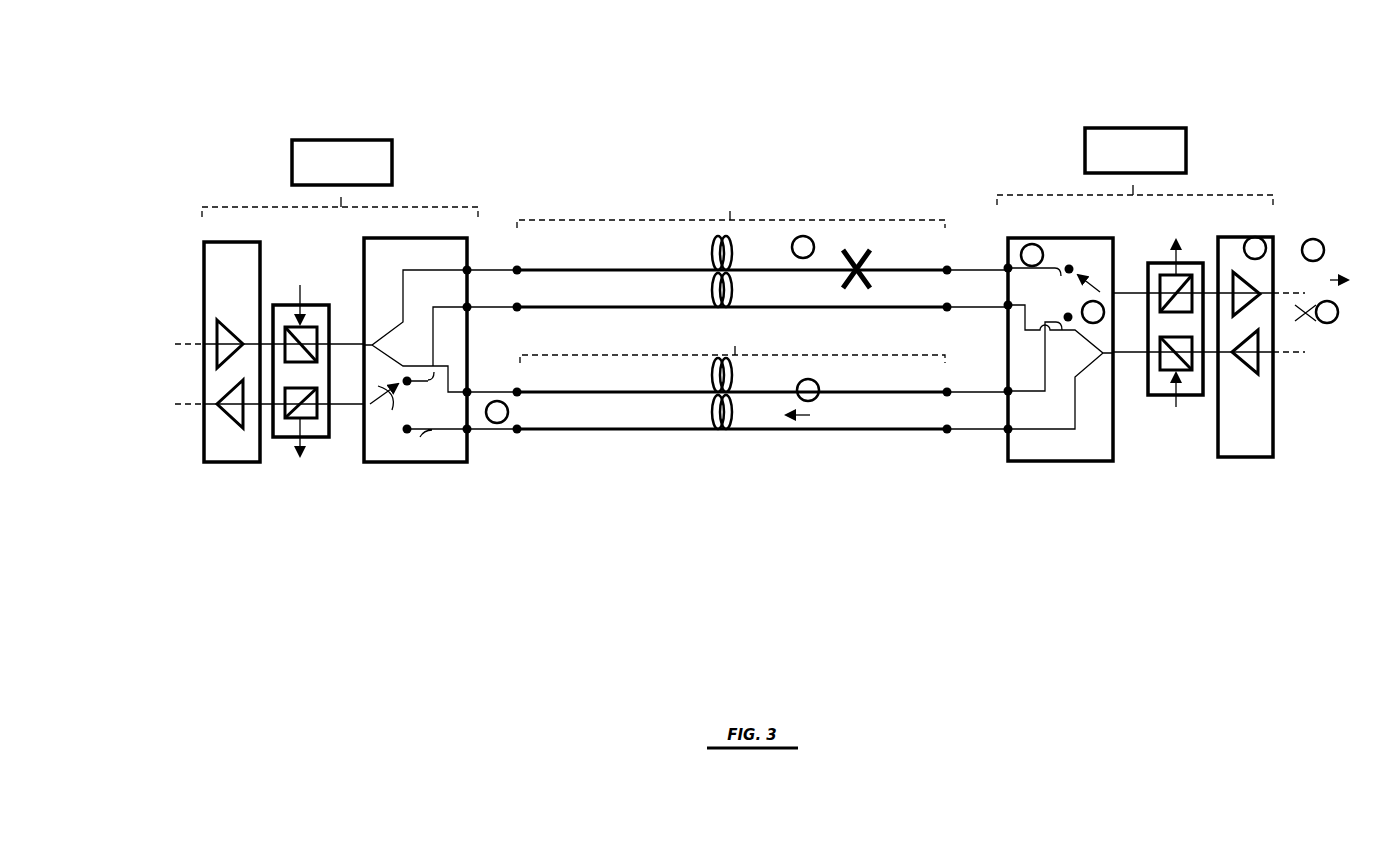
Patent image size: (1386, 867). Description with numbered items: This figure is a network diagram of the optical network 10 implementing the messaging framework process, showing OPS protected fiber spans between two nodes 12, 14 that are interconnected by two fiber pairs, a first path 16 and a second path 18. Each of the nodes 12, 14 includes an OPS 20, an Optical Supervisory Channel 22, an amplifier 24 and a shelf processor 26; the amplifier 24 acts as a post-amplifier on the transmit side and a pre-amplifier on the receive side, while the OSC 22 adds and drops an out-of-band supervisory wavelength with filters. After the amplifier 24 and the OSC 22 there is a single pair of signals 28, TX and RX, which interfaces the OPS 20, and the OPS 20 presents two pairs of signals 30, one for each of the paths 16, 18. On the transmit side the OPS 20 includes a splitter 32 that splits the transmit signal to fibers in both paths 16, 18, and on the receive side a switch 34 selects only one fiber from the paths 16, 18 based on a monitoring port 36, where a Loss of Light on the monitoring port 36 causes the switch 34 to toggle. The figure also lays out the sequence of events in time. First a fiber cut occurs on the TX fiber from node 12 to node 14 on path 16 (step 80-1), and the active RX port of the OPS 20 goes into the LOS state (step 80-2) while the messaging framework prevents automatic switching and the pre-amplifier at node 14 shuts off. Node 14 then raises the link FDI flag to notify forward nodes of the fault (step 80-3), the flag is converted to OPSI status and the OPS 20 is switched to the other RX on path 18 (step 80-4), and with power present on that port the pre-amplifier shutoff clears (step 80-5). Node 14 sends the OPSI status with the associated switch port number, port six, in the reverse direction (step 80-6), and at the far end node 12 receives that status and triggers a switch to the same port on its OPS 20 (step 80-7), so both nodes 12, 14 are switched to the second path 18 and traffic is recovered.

The optical network 10 is at (774, 55).
The node 12 is at (371, 96).
The node 14 is at (1241, 96).
The path 1 16 is at (827, 180).
The path 2 18 is at (828, 458).
The OPS 20 is at (450, 463).
The Optical Supervisory Channel (OSC) 22 is at (290, 437).
The amplifier 24 is at (250, 463).
The shelf processor 26 is at (392, 160).
The single pair of signals 28 is at (348, 428).
The two pairs of signals 30 is at (494, 240).
The splitter 32 is at (738, 349).
The switch 34 is at (747, 344).
The monitoring port 36 is at (735, 363).
The fiber cut step 80-1 is at (808, 236).
The LOS state step 80-2 is at (1040, 245).
The link FDI flag step 80-3 is at (1314, 239).
The OPSI conversion and switch step 80-4 is at (1100, 300).
The pre-amplifier shutoff clearing step 80-5 is at (1262, 238).
The OPSI status sending step 80-6 is at (812, 379).
The far-end switch step 80-7 is at (502, 423).